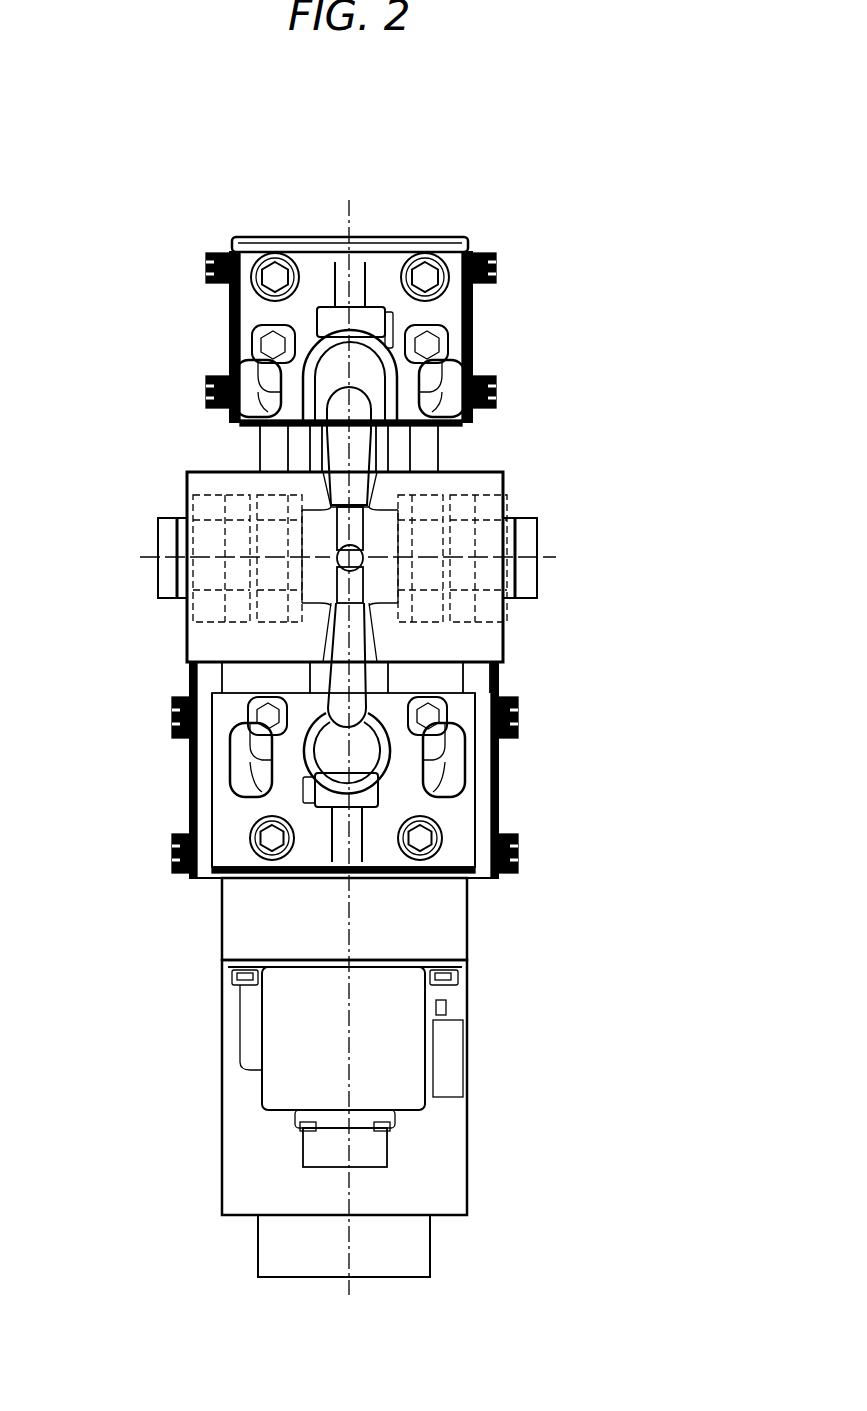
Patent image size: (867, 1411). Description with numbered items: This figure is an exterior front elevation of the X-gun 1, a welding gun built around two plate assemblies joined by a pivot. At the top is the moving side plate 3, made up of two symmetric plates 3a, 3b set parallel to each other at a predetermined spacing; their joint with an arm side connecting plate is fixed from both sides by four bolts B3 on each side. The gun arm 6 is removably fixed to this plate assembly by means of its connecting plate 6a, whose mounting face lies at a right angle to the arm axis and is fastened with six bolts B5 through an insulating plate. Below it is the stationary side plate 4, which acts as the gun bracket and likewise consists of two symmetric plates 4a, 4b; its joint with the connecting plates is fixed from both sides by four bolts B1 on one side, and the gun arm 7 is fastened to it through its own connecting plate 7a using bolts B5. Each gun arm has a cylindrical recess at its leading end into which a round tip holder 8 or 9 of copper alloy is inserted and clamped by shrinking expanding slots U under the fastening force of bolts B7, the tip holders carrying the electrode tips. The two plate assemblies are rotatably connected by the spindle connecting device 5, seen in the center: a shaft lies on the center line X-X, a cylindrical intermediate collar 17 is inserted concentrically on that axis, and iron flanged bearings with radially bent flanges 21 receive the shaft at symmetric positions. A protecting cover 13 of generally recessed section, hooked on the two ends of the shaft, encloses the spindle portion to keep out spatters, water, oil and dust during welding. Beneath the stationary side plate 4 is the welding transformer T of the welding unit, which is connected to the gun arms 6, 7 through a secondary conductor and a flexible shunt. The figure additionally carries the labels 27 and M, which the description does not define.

The X-gun 1 is at (339, 205).
The connecting plate 6a is at (320, 276).
The bolts B3 is at (206, 261).
The bolts B5 is at (431, 262).
The shrinking expanding slots U is at (445, 305).
The gun arm 6 is at (292, 323).
The tip holder 8 is at (342, 393).
The bolts B7 is at (468, 331).
The rotation stopper 27 is at (466, 361).
The moving side plate 3 is at (660, 402).
The plate 3a is at (268, 496).
The plate 3b is at (432, 452).
The protecting cover 13 is at (425, 493).
The spindle connecting device 5 is at (550, 545).
The center line X is at (347, 560).
The flanges 21 is at (242, 506).
The intermediate collar 17 is at (292, 584).
The stationary side plate 4 is at (740, 553).
The plate 4a is at (213, 605).
The plate 4b is at (484, 624).
The tip holder 9 is at (356, 665).
The gun arm 7 is at (384, 750).
The connecting plate 7a is at (421, 807).
The bolts B1 is at (172, 713).
The welding transformer T is at (453, 939).
The motor M is at (455, 1121).